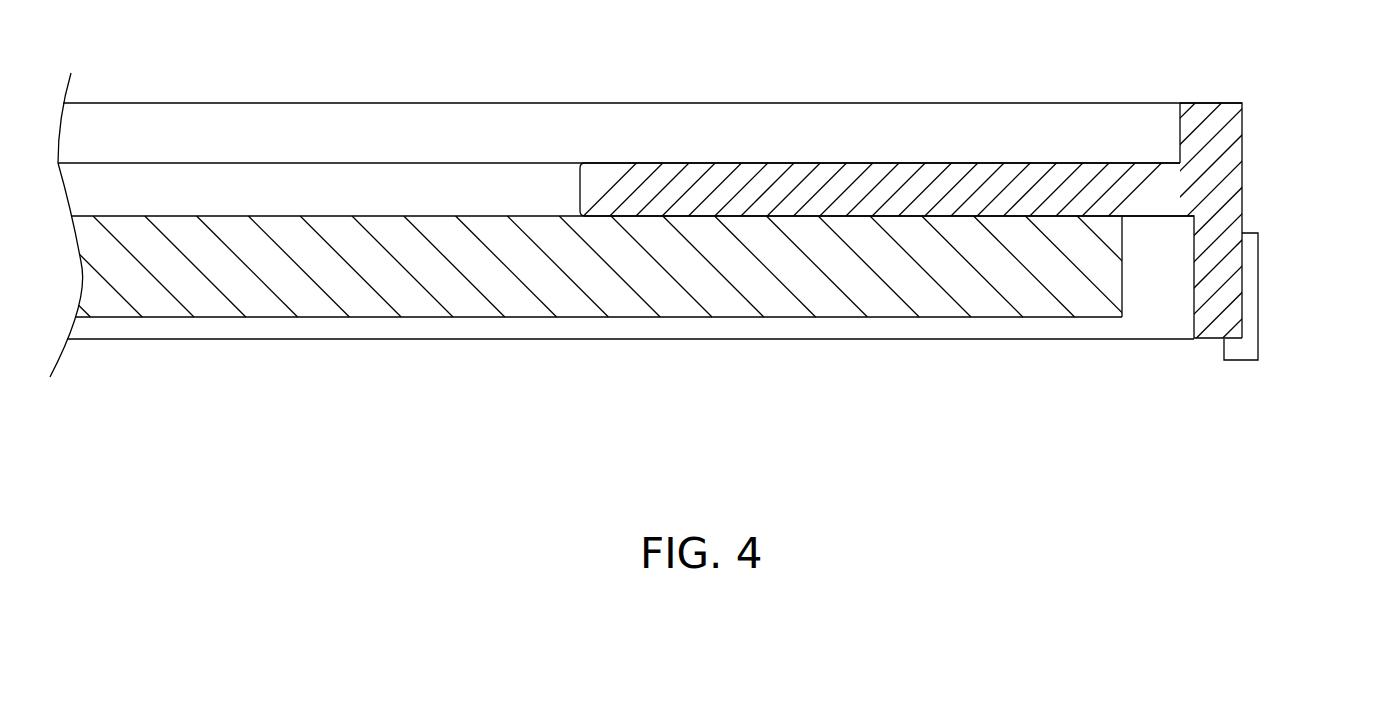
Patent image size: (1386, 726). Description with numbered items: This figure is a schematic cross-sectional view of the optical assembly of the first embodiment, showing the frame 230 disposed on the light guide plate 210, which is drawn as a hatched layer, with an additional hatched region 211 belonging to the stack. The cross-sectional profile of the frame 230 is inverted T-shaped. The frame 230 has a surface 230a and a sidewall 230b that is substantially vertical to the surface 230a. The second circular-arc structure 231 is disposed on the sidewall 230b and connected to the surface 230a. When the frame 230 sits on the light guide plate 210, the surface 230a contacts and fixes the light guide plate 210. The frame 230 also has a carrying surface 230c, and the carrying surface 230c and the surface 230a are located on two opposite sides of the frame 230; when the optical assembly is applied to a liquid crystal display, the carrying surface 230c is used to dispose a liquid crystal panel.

The light guide plate 210 is at (463, 253).
The display panel 211 is at (858, 283).
The frame 230 is at (1256, 150).
The surface 230a is at (1156, 218).
The sidewall 230b is at (1234, 234).
The carrying surface 230c is at (958, 160).
The second circular-arc structure 231 is at (1232, 235).